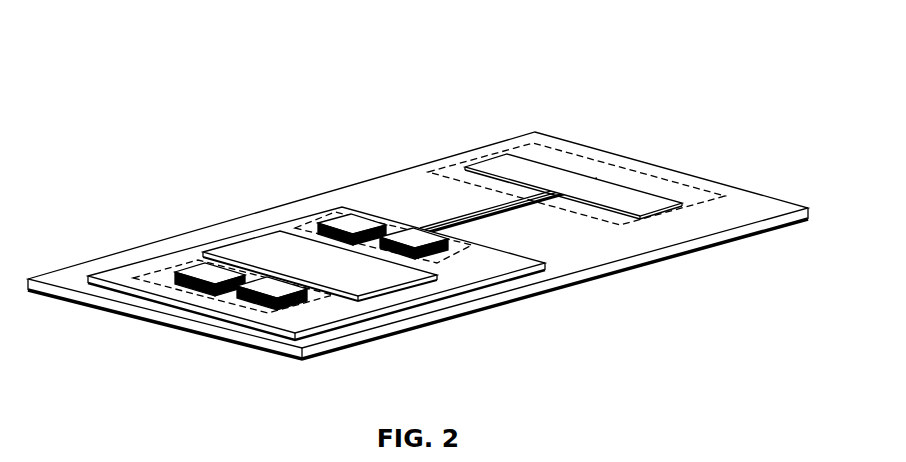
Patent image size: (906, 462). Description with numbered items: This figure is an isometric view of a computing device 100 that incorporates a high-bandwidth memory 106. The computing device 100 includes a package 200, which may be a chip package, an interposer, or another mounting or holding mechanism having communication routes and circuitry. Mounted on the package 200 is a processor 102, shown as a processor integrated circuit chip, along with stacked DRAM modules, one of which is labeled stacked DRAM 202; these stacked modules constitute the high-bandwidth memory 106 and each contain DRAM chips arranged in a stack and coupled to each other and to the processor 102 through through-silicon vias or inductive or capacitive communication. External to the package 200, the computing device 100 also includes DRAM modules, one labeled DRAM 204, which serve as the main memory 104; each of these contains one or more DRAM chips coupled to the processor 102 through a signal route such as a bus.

The computing device 100 is at (637, 243).
The processor 102 is at (383, 277).
The main memory 104 is at (638, 175).
The high-bandwidth memory 106 is at (315, 225).
The package 200 is at (182, 298).
The stacked DRAM 202 is at (207, 270).
The DRAM 204 is at (523, 168).